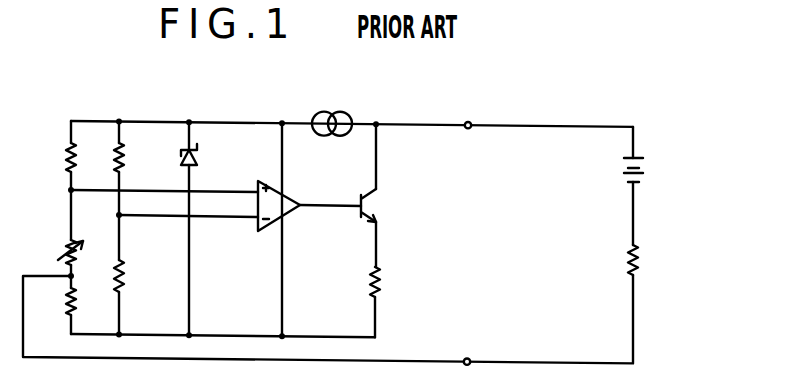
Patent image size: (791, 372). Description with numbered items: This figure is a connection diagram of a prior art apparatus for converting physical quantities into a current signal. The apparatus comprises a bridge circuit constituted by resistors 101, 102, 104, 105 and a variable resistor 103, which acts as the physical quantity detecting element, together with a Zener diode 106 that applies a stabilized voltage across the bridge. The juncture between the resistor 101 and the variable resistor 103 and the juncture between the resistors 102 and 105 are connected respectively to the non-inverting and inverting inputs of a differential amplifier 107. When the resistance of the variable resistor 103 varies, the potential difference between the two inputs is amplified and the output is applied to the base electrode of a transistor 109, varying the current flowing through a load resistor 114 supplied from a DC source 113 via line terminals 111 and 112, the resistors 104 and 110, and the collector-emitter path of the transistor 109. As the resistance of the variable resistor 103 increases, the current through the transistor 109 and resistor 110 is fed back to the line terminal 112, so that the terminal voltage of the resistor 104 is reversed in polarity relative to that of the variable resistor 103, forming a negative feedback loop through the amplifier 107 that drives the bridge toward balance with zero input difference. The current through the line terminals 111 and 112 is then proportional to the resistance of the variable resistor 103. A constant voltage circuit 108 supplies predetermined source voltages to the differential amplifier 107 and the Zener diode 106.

The resistor 101 is at (83, 150).
The resistor 102 is at (131, 150).
The variable resistor 103 is at (79, 239).
The resistor 104 is at (83, 300).
The resistor 105 is at (131, 276).
The Zener diode 106 is at (203, 154).
The differential amplifier 107 is at (309, 206).
The constant voltage circuit 108 is at (332, 110).
The transistor 109 is at (381, 205).
The resistor 110 is at (388, 283).
The line terminal 111 is at (471, 110).
The line terminal 112 is at (468, 347).
The DC source 113 is at (647, 173).
The load resistor 114 is at (647, 260).